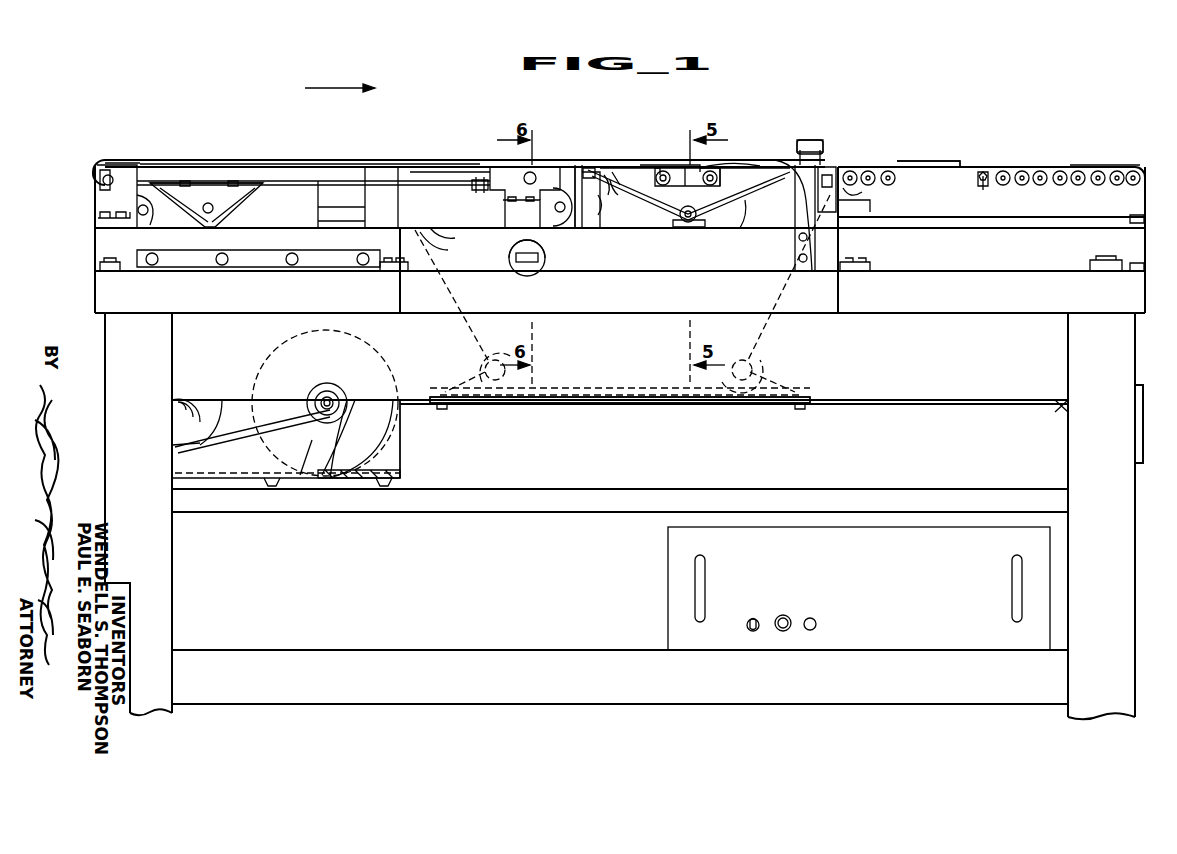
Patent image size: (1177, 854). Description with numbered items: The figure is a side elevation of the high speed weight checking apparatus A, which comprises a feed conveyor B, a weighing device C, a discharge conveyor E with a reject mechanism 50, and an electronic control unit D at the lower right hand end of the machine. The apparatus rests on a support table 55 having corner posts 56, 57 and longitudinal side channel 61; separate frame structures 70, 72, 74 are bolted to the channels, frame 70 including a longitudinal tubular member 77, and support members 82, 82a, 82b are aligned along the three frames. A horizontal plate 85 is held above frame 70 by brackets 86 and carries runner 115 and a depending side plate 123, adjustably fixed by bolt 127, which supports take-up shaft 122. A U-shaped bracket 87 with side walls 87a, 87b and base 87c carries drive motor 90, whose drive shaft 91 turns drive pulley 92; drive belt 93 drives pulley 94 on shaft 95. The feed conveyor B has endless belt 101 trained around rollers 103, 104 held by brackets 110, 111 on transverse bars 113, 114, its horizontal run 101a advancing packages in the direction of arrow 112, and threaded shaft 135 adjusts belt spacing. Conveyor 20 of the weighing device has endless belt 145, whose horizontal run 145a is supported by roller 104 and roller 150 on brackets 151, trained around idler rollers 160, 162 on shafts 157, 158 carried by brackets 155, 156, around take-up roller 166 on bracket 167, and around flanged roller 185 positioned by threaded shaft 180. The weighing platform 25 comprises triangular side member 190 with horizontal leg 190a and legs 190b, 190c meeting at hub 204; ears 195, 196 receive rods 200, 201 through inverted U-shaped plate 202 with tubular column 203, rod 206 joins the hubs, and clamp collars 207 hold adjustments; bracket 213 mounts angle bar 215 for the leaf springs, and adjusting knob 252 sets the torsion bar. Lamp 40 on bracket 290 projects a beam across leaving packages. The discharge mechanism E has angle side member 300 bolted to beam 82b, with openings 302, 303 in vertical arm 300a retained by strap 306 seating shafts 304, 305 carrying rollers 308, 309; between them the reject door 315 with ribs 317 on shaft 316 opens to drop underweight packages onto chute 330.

The weight checking apparatus A is at (815, 110).
The feed conveyor B is at (298, 158).
The weighing device C is at (738, 158).
The electronic control unit D is at (851, 581).
The discharge conveyor E is at (1032, 160).
The arrow 112 is at (345, 85).
The endless belt 101 is at (118, 160).
The transverse roller 103 is at (93, 180).
The upstanding bracket 110 is at (100, 200).
The transverse bar 113 is at (100, 222).
The threaded shaft 135 is at (140, 215).
The bolt 127 is at (233, 180).
The runner 115 is at (245, 165).
The side plate 123 is at (255, 198).
The shaft 122 is at (212, 210).
The support member 82 is at (273, 246).
The horizontal plate 85 is at (327, 176).
The bracket 86 is at (355, 207).
The endless belt 145 is at (360, 221).
The horizontal run 101a is at (402, 163).
The upstanding bracket 111 is at (468, 185).
The transverse roller 104 is at (534, 172).
The transverse bar 114 is at (503, 215).
The transverse angle bar 215 is at (588, 160).
The conveyor 20 is at (594, 160).
The threaded shaft 180 is at (568, 218).
The flanged roller 185 is at (560, 225).
The upstanding bracket 213 is at (598, 205).
The adjusting knob 252 is at (527, 265).
The bracket 167 is at (445, 228).
The take-up roller 166 is at (440, 240).
The support member 82a is at (605, 273).
The weighing platform 25 is at (655, 222).
The rod 200 is at (649, 181).
The inverted U-shaped plate 202 is at (716, 183).
The rod 201 is at (718, 177).
The tubular column 203 is at (623, 190).
The rod 206 is at (688, 224).
The hub 204 is at (689, 242).
The triangular side member 190 is at (757, 190).
The leg 190c is at (742, 215).
The bracket 290 is at (795, 253).
The lamp 40 is at (816, 145).
The transverse roller 150 is at (822, 172).
The horizontal leg 190a is at (742, 160).
The leg 190b is at (612, 168).
The horizontal run 145a is at (620, 168).
The clamp collar 207 is at (660, 168).
The ear 195 is at (688, 165).
The ear 196 is at (718, 165).
The reject mechanism 50 is at (938, 158).
The reject door 315 is at (908, 158).
The roller 308 is at (888, 172).
The semi-cylindrical opening 302 is at (868, 180).
The transverse shaft 304 is at (892, 178).
The rib 317 is at (972, 170).
The strap 306 is at (988, 172).
The shaft 316 is at (983, 188).
The semi-cylindrical opening 303 is at (1040, 186).
The transverse shaft 305 is at (1078, 186).
The roller 309 is at (1132, 172).
The bracket 151 is at (838, 205).
The angle side member 300 is at (922, 225).
The support member 82b is at (975, 259).
The vertical arm 300a is at (1098, 212).
The frame structure 70 is at (97, 292).
The longitudinal tubular member 77 is at (240, 301).
The frame structure 72 is at (638, 313).
The frame structure 74 is at (990, 313).
The longitudinal side channel 61 is at (841, 349).
The flanged idler roller 160 is at (490, 360).
The shaft 157 is at (478, 368).
The upstanding bracket 155 is at (478, 372).
The flanged idler roller 162 is at (745, 358).
The shaft 158 is at (760, 368).
The upstanding bracket 156 is at (792, 380).
The chute 330 is at (1060, 408).
The U-shaped bracket 87 is at (206, 464).
The shaft 95 is at (175, 400).
The pulley 94 is at (185, 425).
The drive belt 93 is at (233, 436).
The drive pulley 92 is at (310, 403).
The drive shaft 91 is at (330, 400).
The drive motor 90 is at (358, 419).
The side wall 87b is at (396, 443).
The base 87c is at (402, 476).
The side wall 87a is at (315, 450).
The corner post 56 is at (120, 519).
The corner post 57 is at (1087, 546).
The support table 55 is at (180, 553).